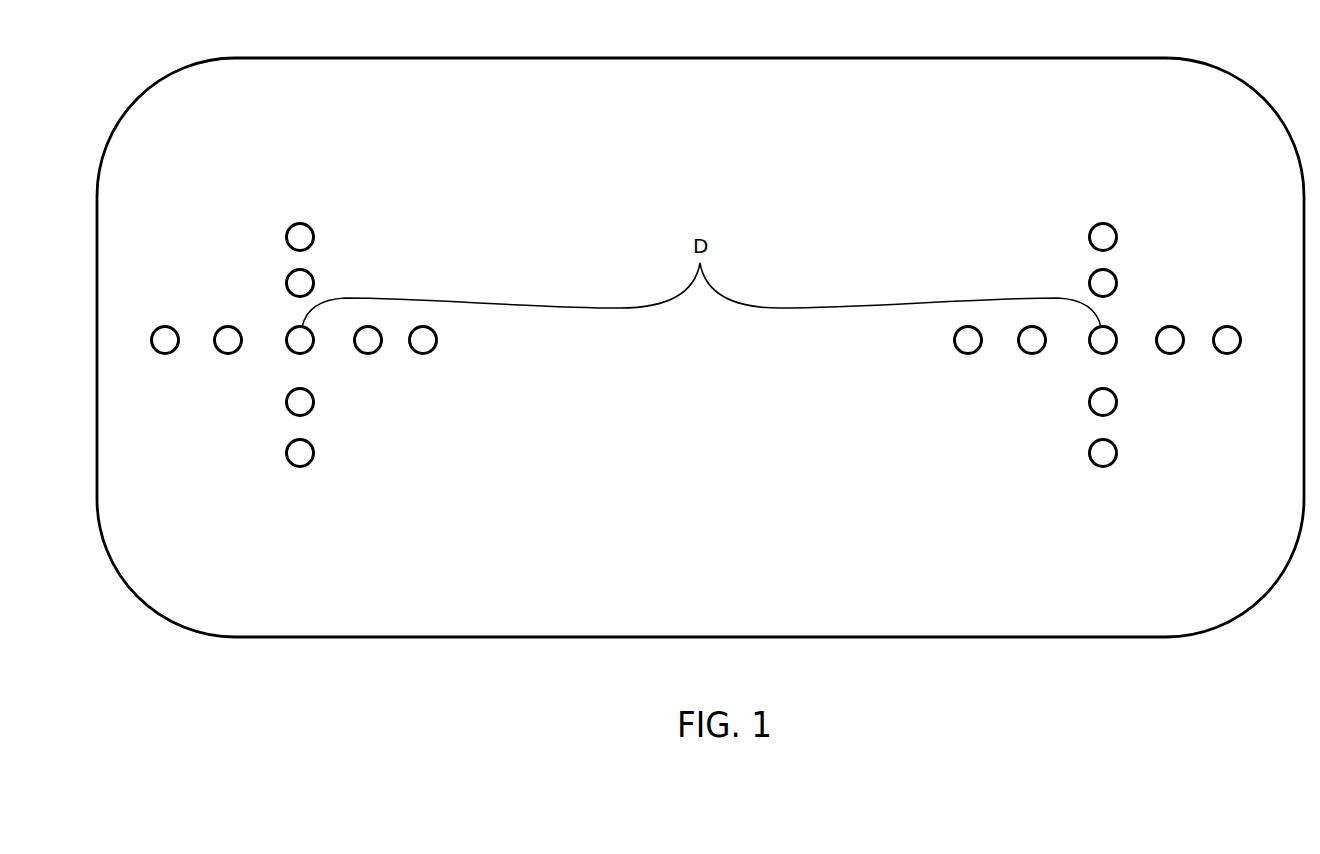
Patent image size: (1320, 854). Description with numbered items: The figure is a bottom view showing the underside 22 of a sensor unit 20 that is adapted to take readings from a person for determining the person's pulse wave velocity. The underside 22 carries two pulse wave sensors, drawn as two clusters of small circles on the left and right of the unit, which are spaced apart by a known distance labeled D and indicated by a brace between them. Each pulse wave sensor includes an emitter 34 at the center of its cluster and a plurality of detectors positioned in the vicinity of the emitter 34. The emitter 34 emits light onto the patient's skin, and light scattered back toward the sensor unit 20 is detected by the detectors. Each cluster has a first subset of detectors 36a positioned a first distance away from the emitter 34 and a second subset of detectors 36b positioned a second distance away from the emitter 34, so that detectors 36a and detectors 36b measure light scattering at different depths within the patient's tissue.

The sensor unit 20 is at (929, 58).
The underside 22 is at (822, 551).
The emitter 34 is at (284, 334).
The first subset of detectors 36a is at (310, 274).
The second subset of detectors 36b is at (310, 226).